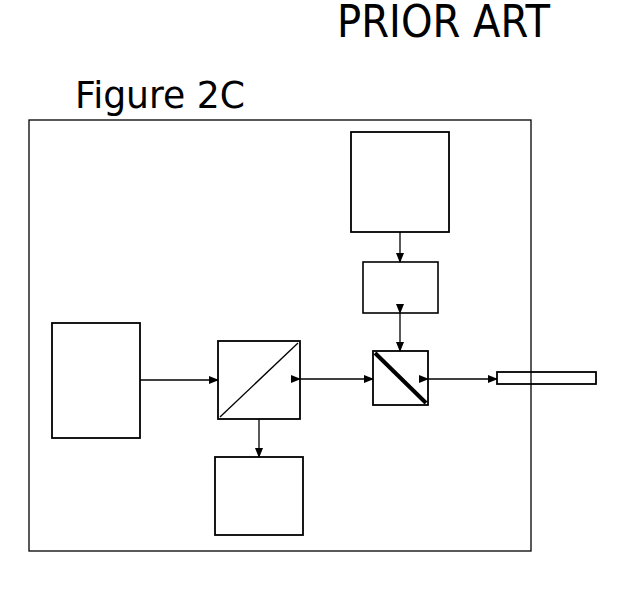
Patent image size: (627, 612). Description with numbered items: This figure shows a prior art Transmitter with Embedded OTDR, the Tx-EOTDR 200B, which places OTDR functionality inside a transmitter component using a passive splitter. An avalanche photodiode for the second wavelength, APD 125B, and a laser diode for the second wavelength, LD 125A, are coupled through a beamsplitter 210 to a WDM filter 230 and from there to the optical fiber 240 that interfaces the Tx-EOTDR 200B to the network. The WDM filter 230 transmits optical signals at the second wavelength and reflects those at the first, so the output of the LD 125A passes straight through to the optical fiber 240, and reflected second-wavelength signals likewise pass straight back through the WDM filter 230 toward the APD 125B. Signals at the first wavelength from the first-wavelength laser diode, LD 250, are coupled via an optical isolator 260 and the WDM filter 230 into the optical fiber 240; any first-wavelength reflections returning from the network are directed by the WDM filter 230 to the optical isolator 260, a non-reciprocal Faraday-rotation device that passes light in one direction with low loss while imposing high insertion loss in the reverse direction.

The Transmitter with Embedded OTDR (Tx-EOTDR) 200B is at (280, 335).
The LD λ2 125A is at (96, 380).
The beamsplitter 210 is at (259, 363).
The APD λ2 125B is at (259, 496).
The LD λ1 250 is at (400, 183).
The optical isolator 260 is at (400, 287).
The WDM filter 230 is at (415, 407).
The optical fiber 240 is at (572, 371).